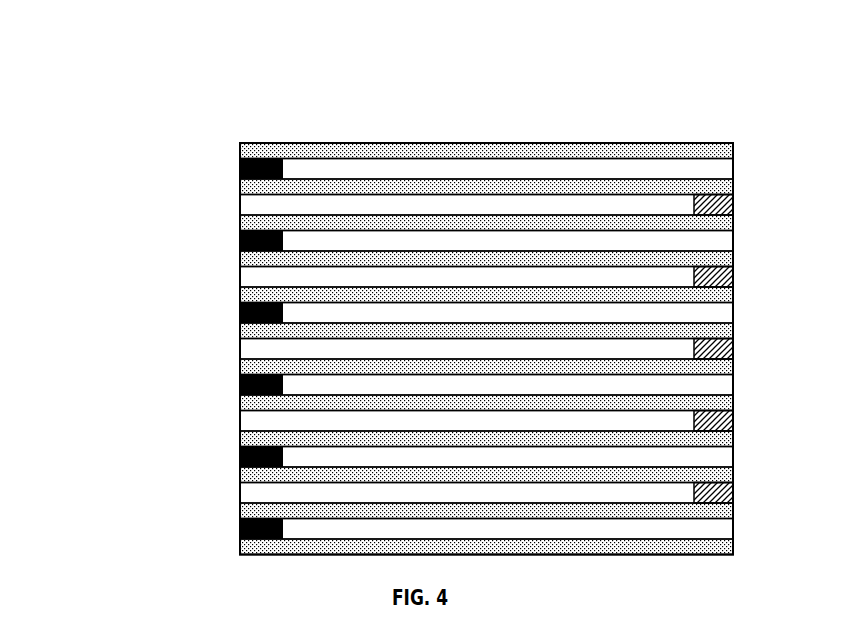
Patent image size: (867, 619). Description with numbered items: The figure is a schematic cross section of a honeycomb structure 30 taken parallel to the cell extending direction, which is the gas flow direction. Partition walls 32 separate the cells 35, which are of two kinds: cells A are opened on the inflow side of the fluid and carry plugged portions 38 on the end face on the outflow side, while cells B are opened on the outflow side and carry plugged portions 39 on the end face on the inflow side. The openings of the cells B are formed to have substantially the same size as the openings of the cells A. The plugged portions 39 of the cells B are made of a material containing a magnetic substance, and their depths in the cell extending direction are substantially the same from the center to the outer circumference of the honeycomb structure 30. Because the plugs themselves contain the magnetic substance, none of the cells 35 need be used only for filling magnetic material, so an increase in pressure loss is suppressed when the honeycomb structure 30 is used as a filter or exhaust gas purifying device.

The honeycomb structure 30 is at (404, 101).
The partition walls 32 is at (563, 188).
The cells 35 is at (240, 315).
The plugged portions 38 is at (732, 207).
The plugged portions 39 is at (240, 241).